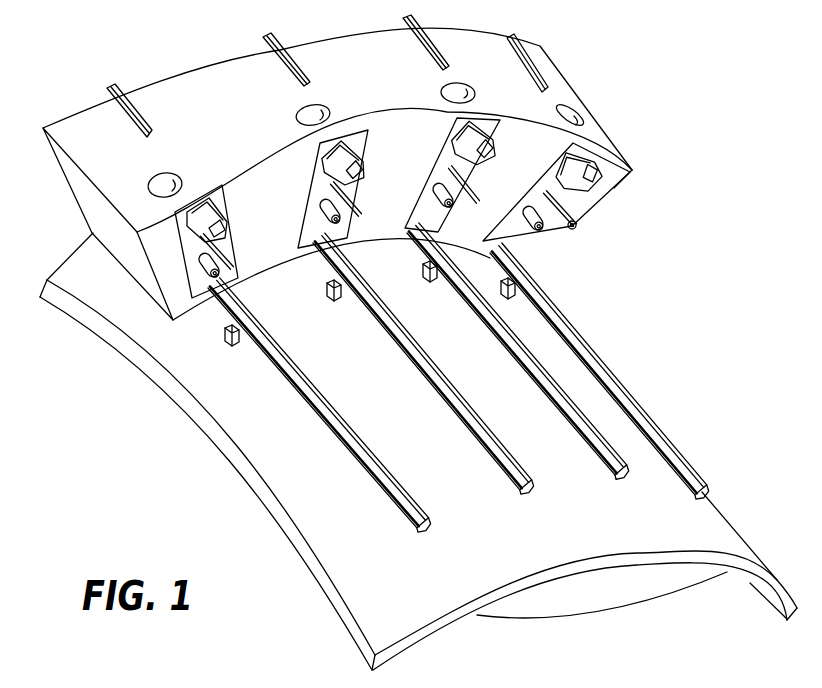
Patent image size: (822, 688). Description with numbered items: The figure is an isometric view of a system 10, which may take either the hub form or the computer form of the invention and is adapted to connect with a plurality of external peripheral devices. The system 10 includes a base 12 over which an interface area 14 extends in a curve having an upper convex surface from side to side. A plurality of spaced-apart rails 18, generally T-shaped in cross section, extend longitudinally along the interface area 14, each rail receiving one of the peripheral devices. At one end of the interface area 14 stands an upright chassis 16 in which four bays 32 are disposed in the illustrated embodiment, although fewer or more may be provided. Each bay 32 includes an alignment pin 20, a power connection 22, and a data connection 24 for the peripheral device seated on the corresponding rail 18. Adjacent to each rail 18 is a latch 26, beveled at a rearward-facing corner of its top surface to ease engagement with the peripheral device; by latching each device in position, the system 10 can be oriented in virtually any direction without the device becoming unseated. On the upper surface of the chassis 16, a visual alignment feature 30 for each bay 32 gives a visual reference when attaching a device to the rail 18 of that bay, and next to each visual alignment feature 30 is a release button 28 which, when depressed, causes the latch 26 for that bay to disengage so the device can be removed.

The system 10 is at (257, 603).
The base 12 is at (623, 605).
The interface area 14 is at (559, 553).
The chassis 16 is at (187, 85).
The rails 18 is at (702, 470).
The alignment pin 20 is at (573, 223).
The power connection 22 is at (553, 238).
The data connection 24 is at (600, 180).
The latch 26 is at (536, 293).
The release buttons 28 is at (327, 110).
The visual alignment feature 30 is at (265, 50).
The bay 32 is at (545, 180).